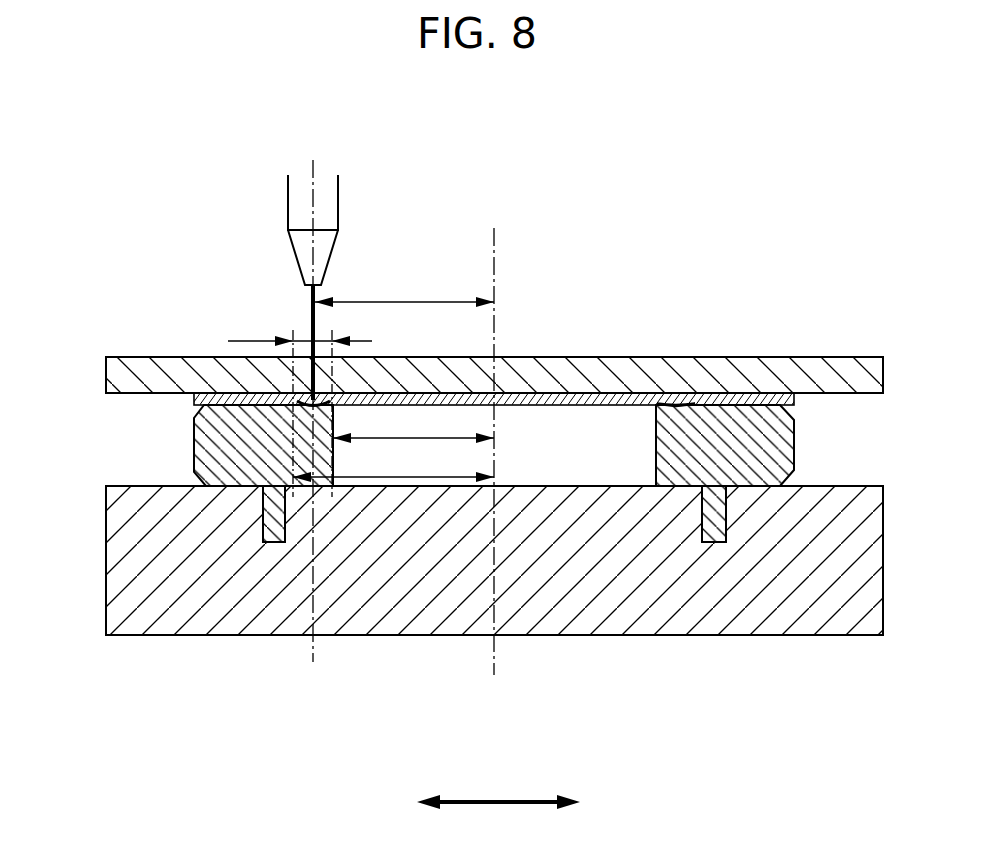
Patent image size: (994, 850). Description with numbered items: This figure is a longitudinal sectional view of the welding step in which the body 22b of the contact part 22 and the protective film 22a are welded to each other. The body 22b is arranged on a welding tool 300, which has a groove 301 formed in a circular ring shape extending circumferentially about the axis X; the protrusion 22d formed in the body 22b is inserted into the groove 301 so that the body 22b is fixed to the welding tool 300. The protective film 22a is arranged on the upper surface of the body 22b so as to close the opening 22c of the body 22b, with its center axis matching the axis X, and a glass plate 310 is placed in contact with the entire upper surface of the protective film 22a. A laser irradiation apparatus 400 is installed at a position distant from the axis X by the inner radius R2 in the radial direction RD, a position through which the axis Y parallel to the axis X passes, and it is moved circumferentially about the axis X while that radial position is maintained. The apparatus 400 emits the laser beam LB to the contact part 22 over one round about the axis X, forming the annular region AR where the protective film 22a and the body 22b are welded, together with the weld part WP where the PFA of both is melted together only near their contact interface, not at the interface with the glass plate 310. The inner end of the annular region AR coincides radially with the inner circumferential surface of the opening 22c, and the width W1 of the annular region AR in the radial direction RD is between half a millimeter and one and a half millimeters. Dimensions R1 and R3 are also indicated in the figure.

The contact part 22 is at (468, 421).
The protective film 22a is at (755, 393).
The body 22b is at (794, 440).
The opening 22c is at (656, 420).
The protrusion 22d is at (262, 508).
The welding tool 300 is at (494, 610).
The groove 301 is at (277, 542).
The glass plate 310 is at (137, 357).
The laser irradiation apparatus 400 is at (328, 202).
The laser beam LB is at (315, 318).
The weld part WP is at (672, 403).
The annular region AR is at (292, 319).
The width of the annular region W1 is at (300, 403).
The distance R1 is at (413, 422).
The inner radius R2 is at (404, 286).
The distance R3 is at (393, 460).
The axis X is at (494, 248).
The axis Y is at (313, 206).
The radial direction RD is at (498, 786).